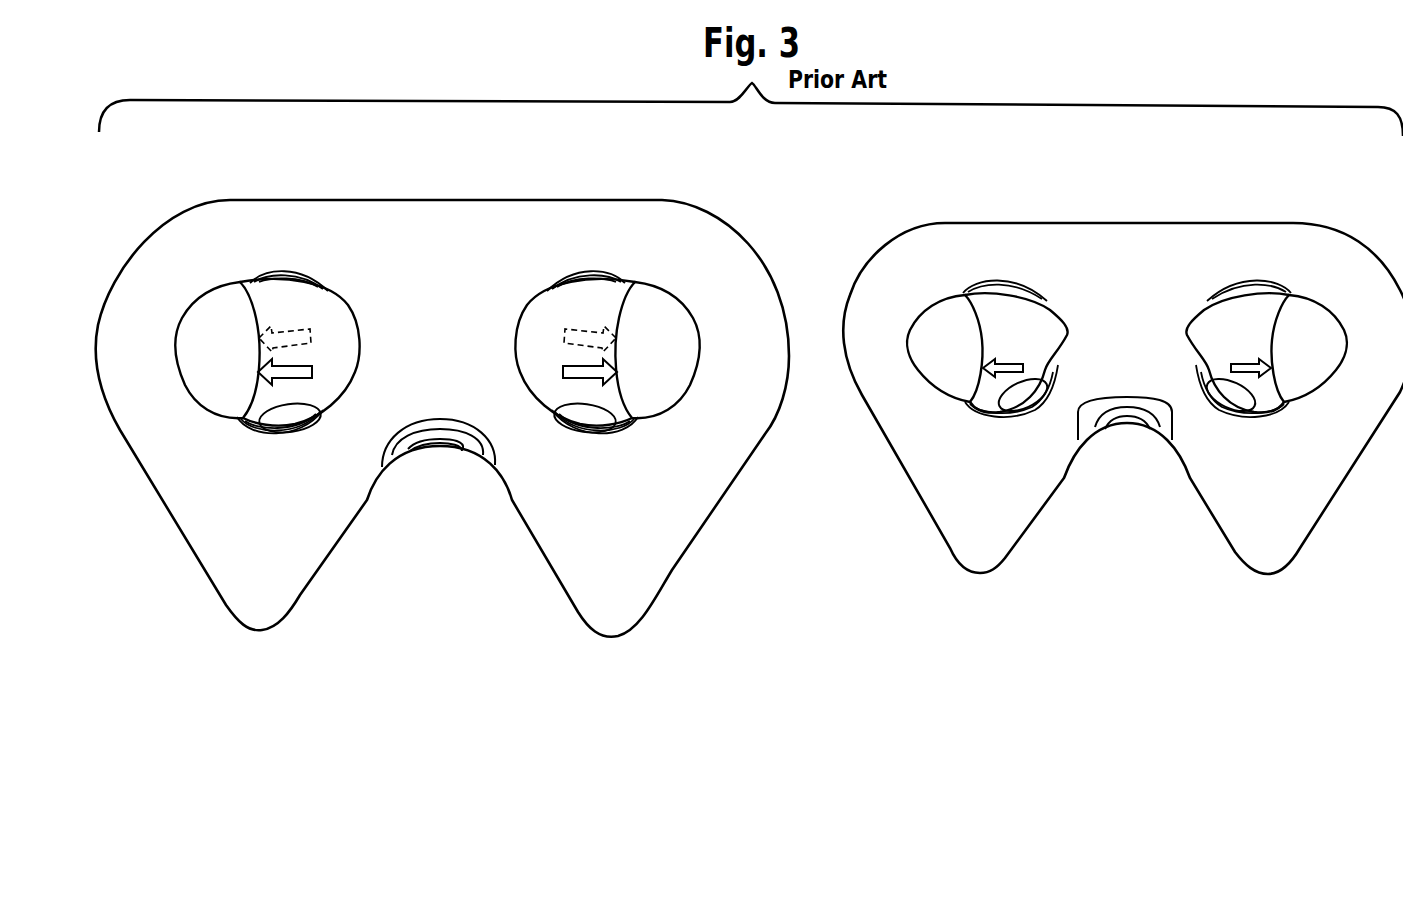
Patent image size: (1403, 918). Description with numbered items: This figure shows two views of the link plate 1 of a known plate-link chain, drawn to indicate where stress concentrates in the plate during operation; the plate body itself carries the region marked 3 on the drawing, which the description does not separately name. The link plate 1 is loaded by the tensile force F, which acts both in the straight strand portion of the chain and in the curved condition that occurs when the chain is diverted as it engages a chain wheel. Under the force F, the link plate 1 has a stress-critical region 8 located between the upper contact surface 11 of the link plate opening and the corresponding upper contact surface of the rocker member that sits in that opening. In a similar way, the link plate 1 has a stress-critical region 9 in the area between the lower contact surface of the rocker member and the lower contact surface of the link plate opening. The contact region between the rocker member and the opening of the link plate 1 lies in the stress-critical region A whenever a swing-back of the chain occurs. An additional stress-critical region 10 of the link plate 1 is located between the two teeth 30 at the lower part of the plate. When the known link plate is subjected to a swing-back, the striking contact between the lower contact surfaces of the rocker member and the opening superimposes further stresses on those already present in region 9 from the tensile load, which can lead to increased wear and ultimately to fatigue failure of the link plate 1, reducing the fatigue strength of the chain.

The link plate 1 is at (660, 553).
The lens 3 is at (215, 315).
The stress-critical region 8 is at (282, 272).
The stress-critical region 9 is at (245, 432).
The additional stress-critical region 10 is at (440, 419).
The upper contact surface 11 is at (333, 295).
The teeth 30 is at (347, 545).
The contact region A is at (306, 432).
The force F is at (764, 355).